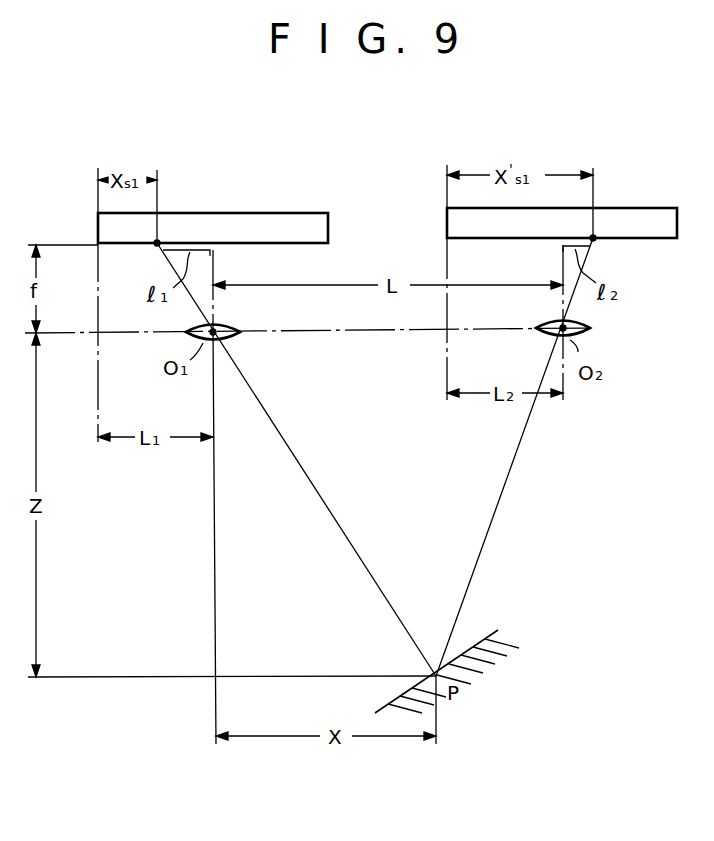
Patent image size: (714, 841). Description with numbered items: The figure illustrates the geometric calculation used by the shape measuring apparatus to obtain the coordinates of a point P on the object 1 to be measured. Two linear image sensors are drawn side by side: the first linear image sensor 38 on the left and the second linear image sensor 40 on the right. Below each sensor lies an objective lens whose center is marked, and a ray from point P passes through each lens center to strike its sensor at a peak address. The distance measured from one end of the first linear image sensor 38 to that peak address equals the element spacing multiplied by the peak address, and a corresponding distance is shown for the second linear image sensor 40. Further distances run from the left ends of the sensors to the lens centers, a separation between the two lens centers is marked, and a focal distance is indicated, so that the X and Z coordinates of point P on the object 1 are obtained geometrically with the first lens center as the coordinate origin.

The first linear image sensor 38 is at (252, 218).
The second linear image sensor 40 is at (637, 215).
The object to be measured 1 is at (494, 632).